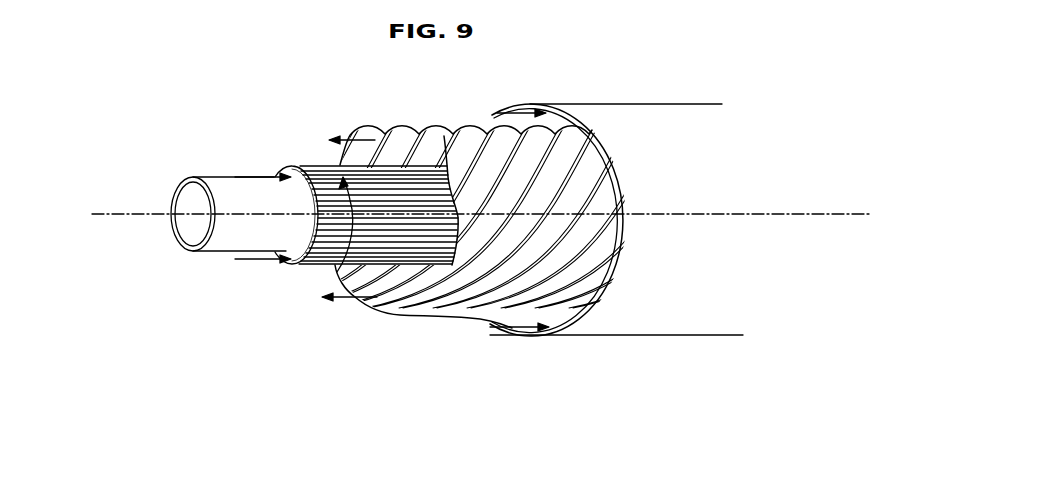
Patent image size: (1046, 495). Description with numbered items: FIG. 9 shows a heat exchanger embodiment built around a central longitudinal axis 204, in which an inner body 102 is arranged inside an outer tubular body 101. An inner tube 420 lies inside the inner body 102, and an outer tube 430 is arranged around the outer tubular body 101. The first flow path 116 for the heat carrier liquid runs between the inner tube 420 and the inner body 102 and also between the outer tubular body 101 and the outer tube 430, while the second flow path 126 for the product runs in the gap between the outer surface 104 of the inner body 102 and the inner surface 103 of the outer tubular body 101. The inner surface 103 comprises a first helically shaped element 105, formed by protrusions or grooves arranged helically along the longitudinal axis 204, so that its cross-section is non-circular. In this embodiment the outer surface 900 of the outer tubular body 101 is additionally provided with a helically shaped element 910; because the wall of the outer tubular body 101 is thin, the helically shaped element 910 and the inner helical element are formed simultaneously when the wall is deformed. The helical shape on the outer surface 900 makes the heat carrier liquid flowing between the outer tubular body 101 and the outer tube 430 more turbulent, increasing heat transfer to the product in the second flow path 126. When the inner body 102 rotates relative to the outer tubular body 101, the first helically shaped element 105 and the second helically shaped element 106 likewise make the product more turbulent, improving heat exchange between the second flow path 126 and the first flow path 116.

The outer tubular body 101 is at (532, 282).
The inner body 102 is at (320, 200).
The inner surface 103 is at (407, 288).
The outer surface 104 is at (317, 247).
The first helically shaped element 105 is at (352, 307).
The second helically shaped element 106 is at (363, 227).
The first flow path 116 is at (300, 178).
The second flow path 126 is at (330, 140).
The longitudinal axis 204 is at (766, 213).
The inner tube 420 is at (238, 233).
The outer tube 430 is at (665, 163).
The outer surface 900 is at (582, 149).
The helically shaped element 910 is at (588, 254).